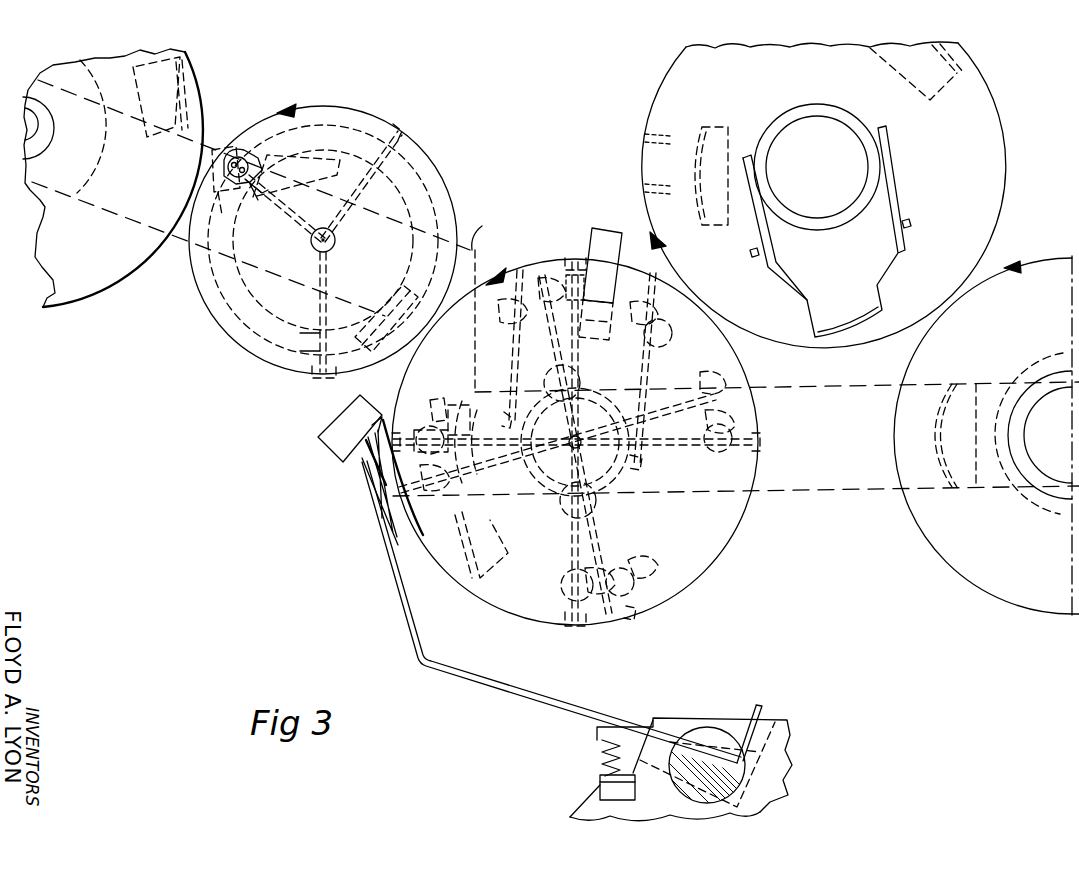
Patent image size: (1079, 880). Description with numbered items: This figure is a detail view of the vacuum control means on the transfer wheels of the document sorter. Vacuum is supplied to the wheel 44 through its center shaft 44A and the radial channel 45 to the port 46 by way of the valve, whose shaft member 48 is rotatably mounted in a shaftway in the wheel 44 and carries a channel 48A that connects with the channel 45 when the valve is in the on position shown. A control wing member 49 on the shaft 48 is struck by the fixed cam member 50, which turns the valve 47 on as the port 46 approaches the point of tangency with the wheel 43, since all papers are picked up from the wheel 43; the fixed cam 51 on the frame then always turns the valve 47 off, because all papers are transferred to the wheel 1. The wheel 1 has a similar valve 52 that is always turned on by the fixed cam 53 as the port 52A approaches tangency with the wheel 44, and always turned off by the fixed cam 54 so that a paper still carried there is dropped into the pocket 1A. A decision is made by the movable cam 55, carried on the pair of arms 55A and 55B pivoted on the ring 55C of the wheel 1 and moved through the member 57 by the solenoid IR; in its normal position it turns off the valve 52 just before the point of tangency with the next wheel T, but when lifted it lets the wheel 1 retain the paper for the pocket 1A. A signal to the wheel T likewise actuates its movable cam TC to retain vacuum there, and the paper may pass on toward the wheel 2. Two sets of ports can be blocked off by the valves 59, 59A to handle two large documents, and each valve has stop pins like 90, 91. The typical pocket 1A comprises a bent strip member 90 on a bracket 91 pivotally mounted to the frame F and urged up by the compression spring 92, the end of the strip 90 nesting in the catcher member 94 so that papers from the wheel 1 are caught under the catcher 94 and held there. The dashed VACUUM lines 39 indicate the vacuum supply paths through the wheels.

The wheel 1 is at (700, 577).
The pocket 1A is at (486, 678).
The wheel 2 is at (966, 583).
The vacuum line 39 is at (178, 240).
The wheel 43 is at (94, 295).
The wheel 44 is at (251, 354).
The center shaft 44A is at (335, 240).
The radial channel 45 is at (311, 241).
The port 46 is at (228, 160).
The valve 47 is at (252, 190).
The shaft member 48 is at (222, 190).
The channel 48A is at (226, 212).
The control wing member 49 is at (248, 163).
The fixed cam member 50 is at (315, 158).
The fixed cam 51 is at (372, 330).
The valve 52 is at (425, 456).
The port 52A is at (437, 418).
The fixed cam 53 is at (458, 420).
The fixed cam 54 is at (468, 562).
The movable cam 55 is at (575, 266).
The arm 55A is at (515, 372).
The arm 55B is at (646, 380).
The ring 55C is at (622, 470).
The member 57 is at (586, 378).
The valve 59 is at (576, 518).
The valve 59A is at (578, 390).
The bent strip member 90 is at (238, 157).
The bracket 91 is at (245, 158).
The compression spring 92 is at (604, 752).
The catcher member 94 is at (360, 458).
The solenoid IR is at (621, 238).
The wheel T is at (799, 347).
The movable cam TC is at (890, 272).
The frame F is at (690, 720).
The vacuum label VACUUM is at (658, 330).